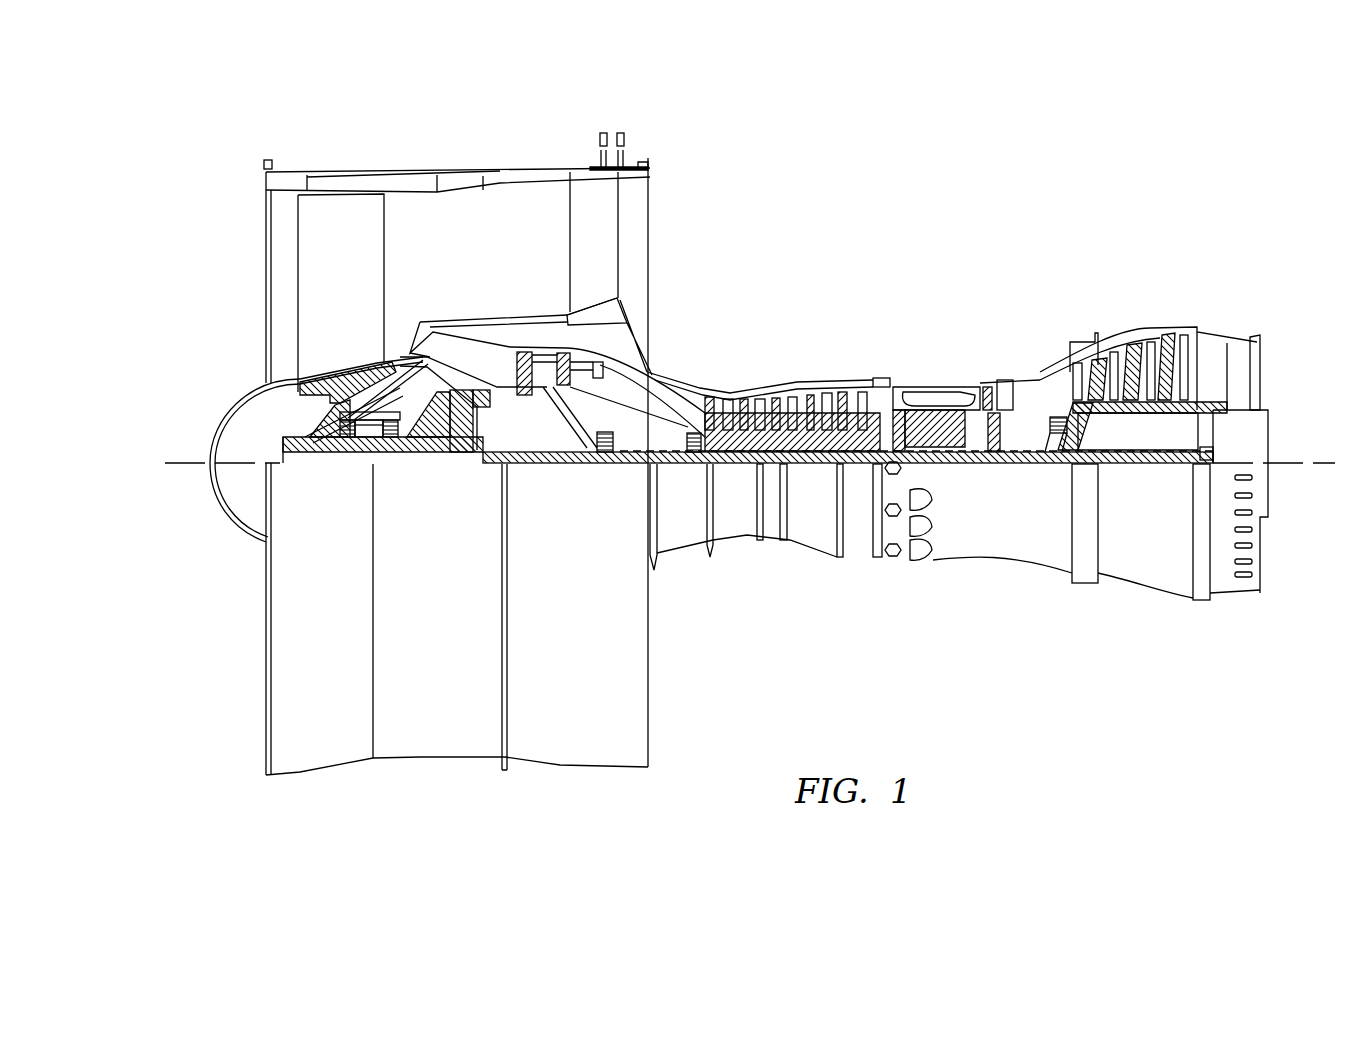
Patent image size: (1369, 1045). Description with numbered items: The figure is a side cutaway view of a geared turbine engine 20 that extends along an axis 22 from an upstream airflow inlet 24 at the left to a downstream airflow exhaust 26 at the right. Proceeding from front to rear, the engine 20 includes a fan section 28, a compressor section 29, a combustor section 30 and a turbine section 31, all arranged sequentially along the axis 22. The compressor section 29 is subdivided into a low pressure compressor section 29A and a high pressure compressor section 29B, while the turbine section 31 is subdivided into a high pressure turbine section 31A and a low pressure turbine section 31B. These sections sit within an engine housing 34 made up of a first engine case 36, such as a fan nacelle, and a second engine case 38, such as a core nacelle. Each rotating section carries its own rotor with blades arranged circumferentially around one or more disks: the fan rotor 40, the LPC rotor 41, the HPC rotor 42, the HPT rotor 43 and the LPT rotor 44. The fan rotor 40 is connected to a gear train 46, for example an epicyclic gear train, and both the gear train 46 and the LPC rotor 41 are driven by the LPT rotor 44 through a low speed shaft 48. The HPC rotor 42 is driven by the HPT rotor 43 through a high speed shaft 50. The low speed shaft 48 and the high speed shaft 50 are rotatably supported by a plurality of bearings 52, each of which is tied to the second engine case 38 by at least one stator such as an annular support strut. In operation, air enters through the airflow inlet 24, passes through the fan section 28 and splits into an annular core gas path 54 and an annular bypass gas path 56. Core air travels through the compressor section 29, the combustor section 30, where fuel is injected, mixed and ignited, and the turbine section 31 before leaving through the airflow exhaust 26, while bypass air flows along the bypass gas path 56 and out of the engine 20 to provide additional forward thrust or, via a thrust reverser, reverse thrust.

The geared turbine engine 20 is at (228, 144).
The axis 22 is at (1295, 463).
The upstream airflow inlet 24 is at (266, 213).
The downstream airflow exhaust 26 is at (1265, 368).
The fan section 28 is at (425, 145).
The compressor section 29 is at (855, 78).
The low pressure compressor section 29A is at (652, 131).
The high pressure compressor section 29B is at (855, 297).
The combustor section 30 is at (975, 299).
The turbine section 31 is at (1222, 232).
The high pressure turbine section 31A is at (1052, 299).
The low pressure turbine section 31B is at (1222, 299).
The engine housing 34 is at (676, 597).
The first engine case 36 is at (585, 770).
The second engine case 38 is at (863, 563).
The fan rotor 40 is at (272, 390).
The LPC rotor 41 is at (562, 412).
The HPC rotor 42 is at (797, 432).
The HPT rotor 43 is at (995, 455).
The LPT rotor 44 is at (1138, 408).
The gear train 46 is at (455, 465).
The low speed shaft 48 is at (1150, 464).
The high speed shaft 50 is at (940, 455).
The bearings 52 is at (387, 445).
The annular core gas path 54 is at (668, 388).
The annular bypass gas path 56 is at (486, 258).